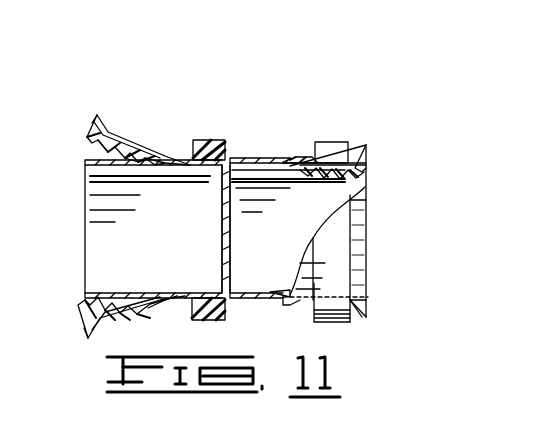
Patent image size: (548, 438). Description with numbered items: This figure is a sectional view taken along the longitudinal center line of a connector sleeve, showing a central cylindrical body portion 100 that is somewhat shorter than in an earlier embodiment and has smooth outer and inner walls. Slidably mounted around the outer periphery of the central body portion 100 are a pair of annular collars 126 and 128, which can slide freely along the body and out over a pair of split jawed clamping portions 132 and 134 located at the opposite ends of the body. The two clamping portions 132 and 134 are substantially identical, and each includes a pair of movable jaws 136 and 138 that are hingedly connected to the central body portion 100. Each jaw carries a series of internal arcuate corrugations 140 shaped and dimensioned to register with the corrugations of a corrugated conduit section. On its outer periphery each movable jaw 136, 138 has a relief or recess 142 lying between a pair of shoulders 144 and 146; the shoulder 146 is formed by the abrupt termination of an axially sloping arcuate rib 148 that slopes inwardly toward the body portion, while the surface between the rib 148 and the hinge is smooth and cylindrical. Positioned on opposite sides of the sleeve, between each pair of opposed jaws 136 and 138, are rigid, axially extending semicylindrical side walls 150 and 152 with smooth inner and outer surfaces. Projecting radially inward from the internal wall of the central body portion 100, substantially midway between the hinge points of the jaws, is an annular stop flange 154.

The central cylindrical body portion 100 is at (237, 162).
The annular collar 126 is at (198, 139).
The annular collar 128 is at (330, 143).
The split jawed clamping portion 132 is at (72, 290).
The split jawed clamping portion 134 is at (372, 300).
The movable jaw 136 is at (88, 139).
The movable jaw 138 is at (87, 317).
The internal arcuate corrugations 140 is at (88, 164).
The relief or recess 142 is at (108, 140).
The shoulder 144 is at (101, 115).
The shoulder 146 is at (138, 152).
The axially sloping arcuate rib 148 is at (148, 160).
The semicylindrical side wall 150 is at (188, 229).
The semicylindrical side wall 152 is at (358, 227).
The stop flange 154 is at (225, 237).